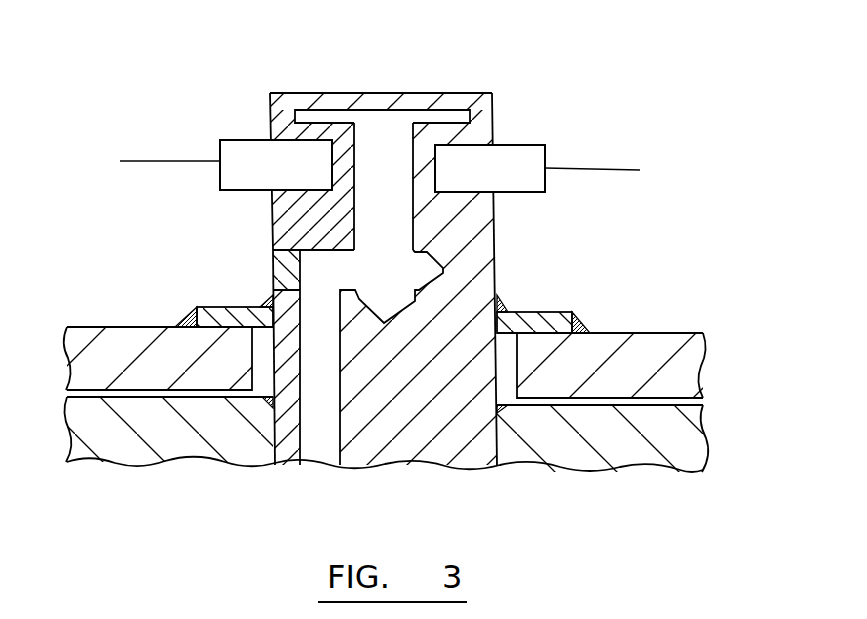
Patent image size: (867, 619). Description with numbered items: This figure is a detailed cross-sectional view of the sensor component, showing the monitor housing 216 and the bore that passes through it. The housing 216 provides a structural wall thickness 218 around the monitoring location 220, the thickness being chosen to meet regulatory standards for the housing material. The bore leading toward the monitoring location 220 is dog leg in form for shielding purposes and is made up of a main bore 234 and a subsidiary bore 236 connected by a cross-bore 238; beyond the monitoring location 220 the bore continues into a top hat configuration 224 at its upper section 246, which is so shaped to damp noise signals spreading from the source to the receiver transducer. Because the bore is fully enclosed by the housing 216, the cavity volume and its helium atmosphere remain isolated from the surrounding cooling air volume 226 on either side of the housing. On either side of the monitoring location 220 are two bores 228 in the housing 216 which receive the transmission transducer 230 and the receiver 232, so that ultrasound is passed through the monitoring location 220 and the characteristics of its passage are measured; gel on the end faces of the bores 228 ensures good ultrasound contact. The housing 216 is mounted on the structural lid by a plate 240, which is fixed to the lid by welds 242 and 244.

The monitor housing 216 is at (432, 277).
The structural wall thickness 218 is at (410, 103).
The monitoring location 220 is at (404, 195).
The top hat configuration 224 is at (373, 127).
The cooling air volume 226 is at (155, 110).
The bores 228 is at (290, 120).
The transmission transducer 230 is at (226, 113).
The receiver 232 is at (578, 208).
The main bore 234 is at (315, 402).
The subsidiary bore 236 is at (383, 227).
The cross-bore 238 is at (317, 285).
The plate 240 is at (527, 323).
The weld 242 is at (480, 300).
The weld 244 is at (577, 333).
The upper section 246 is at (387, 92).